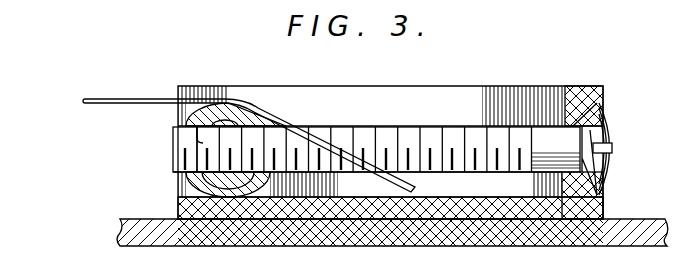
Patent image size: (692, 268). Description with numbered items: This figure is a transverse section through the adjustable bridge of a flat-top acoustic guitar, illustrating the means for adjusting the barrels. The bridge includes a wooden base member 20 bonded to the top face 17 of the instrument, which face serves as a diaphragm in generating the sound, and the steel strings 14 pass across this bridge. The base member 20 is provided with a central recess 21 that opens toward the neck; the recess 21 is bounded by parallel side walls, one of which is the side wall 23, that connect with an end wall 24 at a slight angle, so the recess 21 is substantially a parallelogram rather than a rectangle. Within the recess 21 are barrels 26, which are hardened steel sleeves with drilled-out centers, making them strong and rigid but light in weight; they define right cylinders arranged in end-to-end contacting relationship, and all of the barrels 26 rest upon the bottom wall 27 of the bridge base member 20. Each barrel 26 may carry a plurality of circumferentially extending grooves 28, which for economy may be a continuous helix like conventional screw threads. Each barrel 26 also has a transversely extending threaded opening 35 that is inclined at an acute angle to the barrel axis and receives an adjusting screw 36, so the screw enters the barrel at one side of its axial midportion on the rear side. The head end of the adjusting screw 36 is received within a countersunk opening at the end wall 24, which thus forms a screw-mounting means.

The steel strings 14 is at (127, 100).
The top face 17 is at (127, 237).
The base member 20 is at (289, 76).
The central recess 21 is at (381, 110).
The side wall 23 is at (298, 109).
The end wall 24 is at (578, 86).
The barrels 26 is at (200, 188).
The bottom wall 27 is at (440, 193).
The circumferentially extending grooves 28 is at (173, 113).
The threaded opening 35 is at (173, 141).
The adjusting screw 36 is at (608, 132).